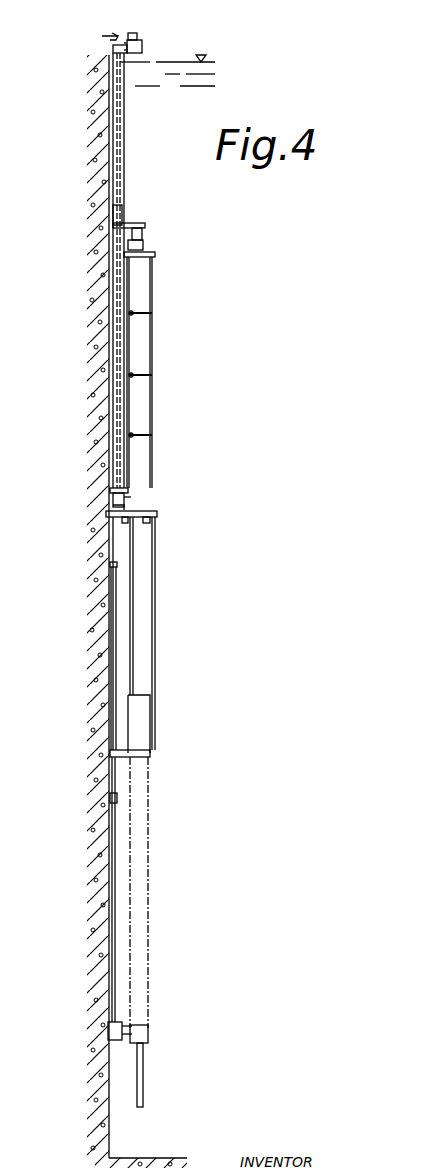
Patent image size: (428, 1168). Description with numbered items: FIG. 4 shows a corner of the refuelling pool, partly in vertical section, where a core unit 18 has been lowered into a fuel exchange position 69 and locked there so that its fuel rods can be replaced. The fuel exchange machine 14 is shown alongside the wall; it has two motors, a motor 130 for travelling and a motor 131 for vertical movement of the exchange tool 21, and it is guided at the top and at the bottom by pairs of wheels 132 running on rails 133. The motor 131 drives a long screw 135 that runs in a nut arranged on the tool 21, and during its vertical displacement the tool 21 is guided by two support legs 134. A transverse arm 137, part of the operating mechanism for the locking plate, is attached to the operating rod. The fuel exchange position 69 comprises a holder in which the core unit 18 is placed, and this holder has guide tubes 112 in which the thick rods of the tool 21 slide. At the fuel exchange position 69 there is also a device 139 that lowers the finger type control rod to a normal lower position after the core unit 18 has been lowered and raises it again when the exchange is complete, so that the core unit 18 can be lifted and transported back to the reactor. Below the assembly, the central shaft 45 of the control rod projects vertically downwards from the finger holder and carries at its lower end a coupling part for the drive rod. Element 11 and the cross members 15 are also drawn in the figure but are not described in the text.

The cylinder 11 is at (130, 300).
The fuel exchange machine 14 is at (142, 235).
The cross members 15 is at (152, 314).
The core unit 18 is at (143, 543).
The exchange tool 21 is at (143, 244).
The central shaft 45 is at (143, 1075).
The fuel exchange position 69 is at (138, 827).
The guide tube 112 is at (133, 607).
The travelling motor 130 is at (142, 46).
The vertical movement motor 131 is at (134, 36).
The wheels 132 is at (113, 52).
The rails 133 is at (102, 36).
The support legs 134 is at (118, 143).
The long screw 135 is at (125, 111).
The transverse arm 137 is at (130, 222).
The control rod lowering device 139 is at (114, 986).